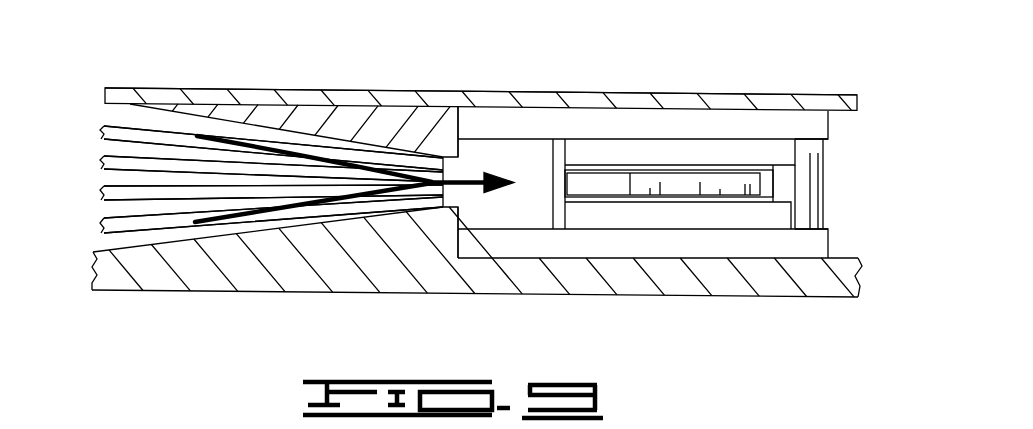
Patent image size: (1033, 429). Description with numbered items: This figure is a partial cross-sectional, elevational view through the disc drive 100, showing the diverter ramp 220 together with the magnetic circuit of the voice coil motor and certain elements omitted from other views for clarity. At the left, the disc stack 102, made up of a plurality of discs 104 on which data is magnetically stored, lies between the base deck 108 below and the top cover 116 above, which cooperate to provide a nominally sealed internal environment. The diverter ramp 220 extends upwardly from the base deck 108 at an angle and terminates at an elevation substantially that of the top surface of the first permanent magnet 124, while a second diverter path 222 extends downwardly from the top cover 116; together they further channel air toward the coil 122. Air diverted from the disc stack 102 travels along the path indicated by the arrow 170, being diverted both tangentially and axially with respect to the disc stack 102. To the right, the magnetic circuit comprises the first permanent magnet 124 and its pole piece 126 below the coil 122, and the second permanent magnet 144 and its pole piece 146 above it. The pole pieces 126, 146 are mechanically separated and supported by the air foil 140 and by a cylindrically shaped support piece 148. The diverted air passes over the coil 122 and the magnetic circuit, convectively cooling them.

The disc drive 100 is at (166, 62).
The disc stack 102 is at (97, 111).
The discs 104 is at (118, 225).
The base deck 108 is at (732, 292).
The top cover 116 is at (585, 100).
The coil 122 is at (660, 183).
The first permanent magnet 124 is at (587, 217).
The pole piece 126 is at (808, 248).
The air foil 140 is at (495, 146).
The second permanent magnet 144 is at (763, 152).
The second pole piece 146 is at (810, 128).
The support piece 148 is at (800, 186).
The air flow path 170 is at (287, 162).
The diverter ramp 220 is at (359, 248).
The second diverter path 222 is at (417, 117).